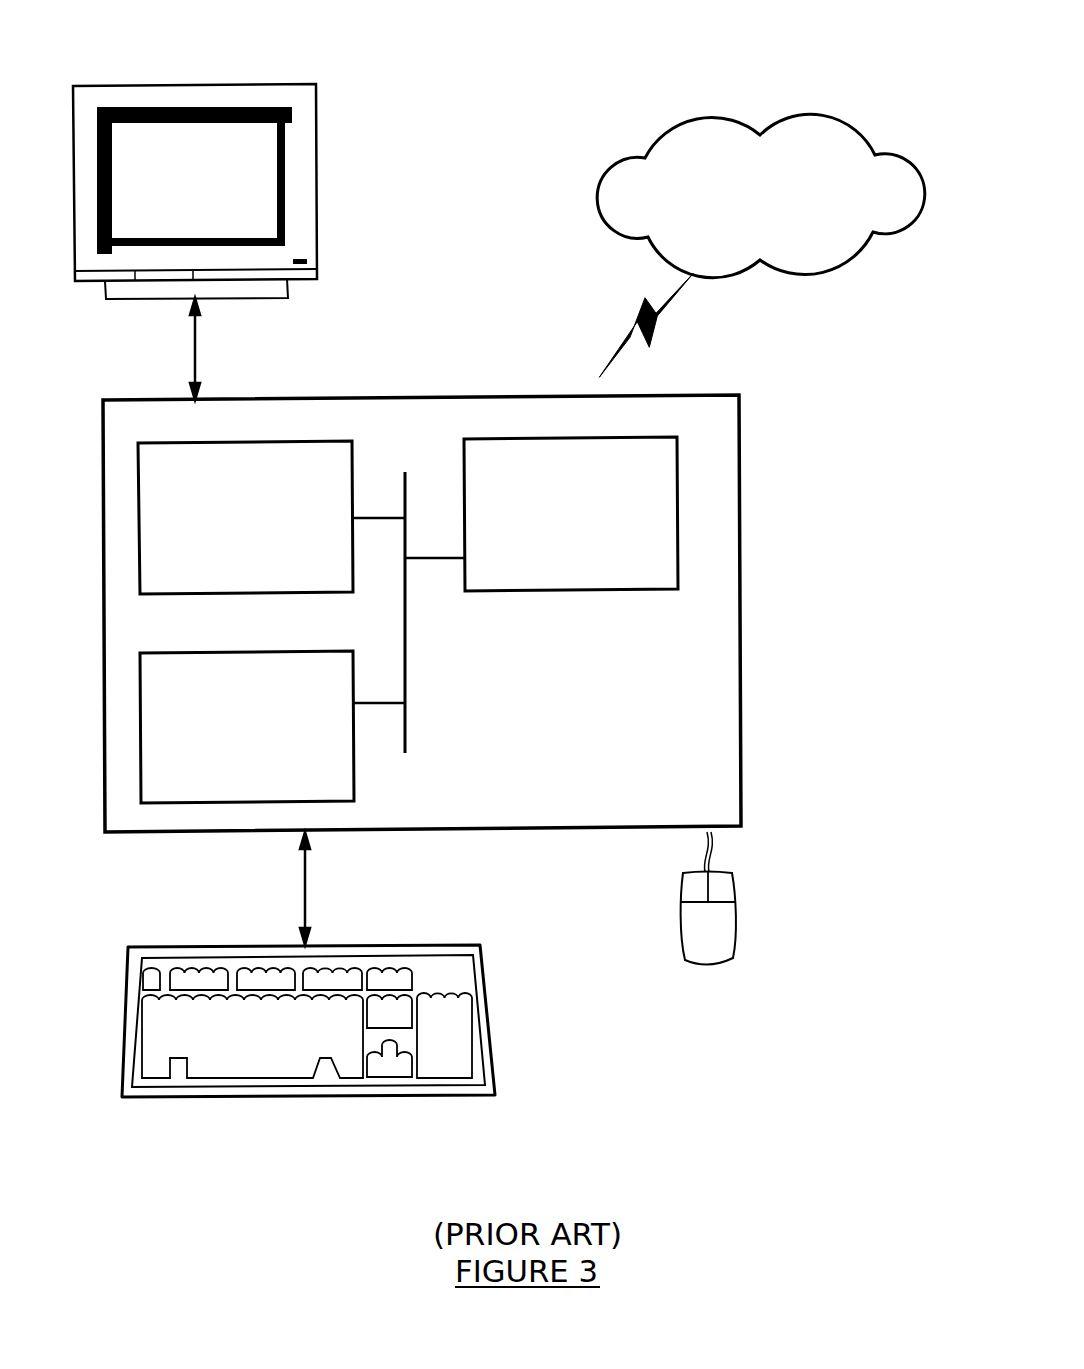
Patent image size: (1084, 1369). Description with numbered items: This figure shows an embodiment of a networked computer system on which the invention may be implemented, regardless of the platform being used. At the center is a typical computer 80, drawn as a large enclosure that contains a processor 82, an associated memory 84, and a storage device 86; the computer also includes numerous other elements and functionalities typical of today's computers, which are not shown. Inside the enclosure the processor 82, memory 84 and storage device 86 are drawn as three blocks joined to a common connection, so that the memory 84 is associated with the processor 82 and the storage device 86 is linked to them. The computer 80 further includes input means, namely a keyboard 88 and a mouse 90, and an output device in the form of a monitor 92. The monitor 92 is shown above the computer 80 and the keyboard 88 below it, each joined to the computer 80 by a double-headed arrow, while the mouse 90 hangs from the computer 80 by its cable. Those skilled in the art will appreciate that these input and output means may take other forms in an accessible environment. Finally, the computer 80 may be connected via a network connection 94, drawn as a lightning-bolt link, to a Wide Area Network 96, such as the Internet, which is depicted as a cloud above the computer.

The computer 80 is at (742, 697).
The processor 82 is at (603, 527).
The memory 84 is at (262, 533).
The storage device 86 is at (261, 742).
The keyboard 88 is at (249, 1048).
The mouse 90 is at (724, 945).
The monitor 92 is at (222, 204).
The network connection 94 is at (640, 315).
The Wide Area Network (WAN) 96 is at (742, 120).